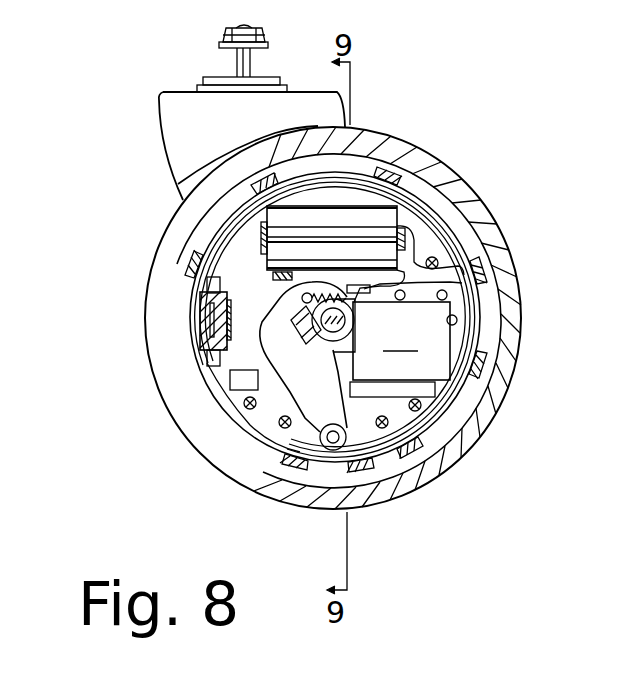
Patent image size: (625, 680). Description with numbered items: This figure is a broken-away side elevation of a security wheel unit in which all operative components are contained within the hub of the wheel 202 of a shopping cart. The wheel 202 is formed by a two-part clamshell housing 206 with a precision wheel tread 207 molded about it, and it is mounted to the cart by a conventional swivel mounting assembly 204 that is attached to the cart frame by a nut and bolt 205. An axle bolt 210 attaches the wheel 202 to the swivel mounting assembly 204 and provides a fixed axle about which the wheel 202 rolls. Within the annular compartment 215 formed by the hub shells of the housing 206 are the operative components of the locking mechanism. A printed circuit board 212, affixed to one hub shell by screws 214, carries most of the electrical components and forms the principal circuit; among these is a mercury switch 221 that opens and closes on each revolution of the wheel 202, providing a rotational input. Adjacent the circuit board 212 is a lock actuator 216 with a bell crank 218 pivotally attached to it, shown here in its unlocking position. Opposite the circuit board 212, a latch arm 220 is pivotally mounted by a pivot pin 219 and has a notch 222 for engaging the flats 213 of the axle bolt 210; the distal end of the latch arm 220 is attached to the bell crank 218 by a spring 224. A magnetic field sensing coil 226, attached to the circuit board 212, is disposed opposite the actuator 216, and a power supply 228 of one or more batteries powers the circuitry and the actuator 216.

The wheel 202 is at (210, 470).
The swivel mounting assembly 204 is at (168, 112).
The nut and bolt 205 is at (235, 32).
The clamshell housing 206 is at (228, 391).
The wheel tread 207 is at (516, 320).
The axle bolt 210 is at (442, 272).
The printed circuit board 212 is at (470, 445).
The flats 213 is at (362, 352).
The screws 214 is at (392, 424).
The annular compartment 215 is at (328, 201).
The lock actuator 216 is at (405, 335).
The bell crank 218 is at (405, 262).
The pivot pin 219 is at (333, 443).
The latch arm 220 is at (322, 408).
The mercury switch 221 is at (202, 361).
The notch 222 is at (250, 275).
The spring 224 is at (343, 288).
The magnetic field sensing coil 226 is at (196, 322).
The power supply 228 is at (343, 218).